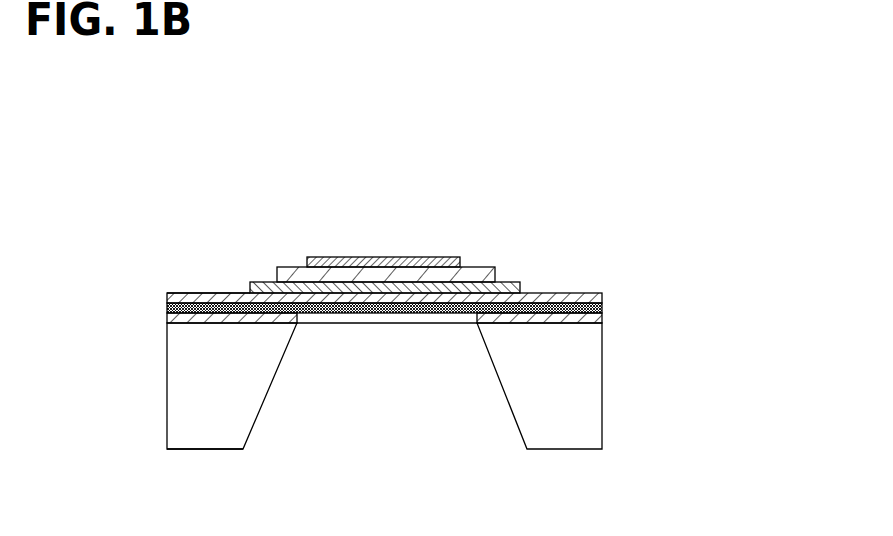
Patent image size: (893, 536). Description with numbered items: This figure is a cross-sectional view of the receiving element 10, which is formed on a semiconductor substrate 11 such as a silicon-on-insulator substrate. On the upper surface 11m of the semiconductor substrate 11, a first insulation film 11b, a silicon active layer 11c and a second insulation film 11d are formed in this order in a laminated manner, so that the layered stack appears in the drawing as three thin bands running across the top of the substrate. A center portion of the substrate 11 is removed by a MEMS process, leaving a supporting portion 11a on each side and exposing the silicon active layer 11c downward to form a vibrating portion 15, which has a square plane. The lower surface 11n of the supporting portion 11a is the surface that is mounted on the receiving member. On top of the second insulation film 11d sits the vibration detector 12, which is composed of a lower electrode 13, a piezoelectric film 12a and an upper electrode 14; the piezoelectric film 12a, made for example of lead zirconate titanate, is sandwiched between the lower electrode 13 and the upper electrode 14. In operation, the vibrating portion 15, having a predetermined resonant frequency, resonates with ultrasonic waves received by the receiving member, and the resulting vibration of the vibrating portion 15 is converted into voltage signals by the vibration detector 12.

The receiving element 10 is at (532, 197).
The semiconductor substrate 11 is at (713, 252).
The supporting portion 11a is at (598, 388).
The first insulation film 11b is at (603, 323).
The silicon active layer 11c is at (603, 310).
The second insulation film 11d is at (603, 296).
The upper surface of the semiconductor substrate 11m is at (190, 302).
The lower surface of the supporting portion 11n is at (215, 449).
The vibration detector 12 is at (398, 182).
The piezoelectric film 12a is at (293, 268).
The lower electrode 13 is at (263, 282).
The upper electrode 14 is at (363, 257).
The vibrating portion 15 is at (385, 324).